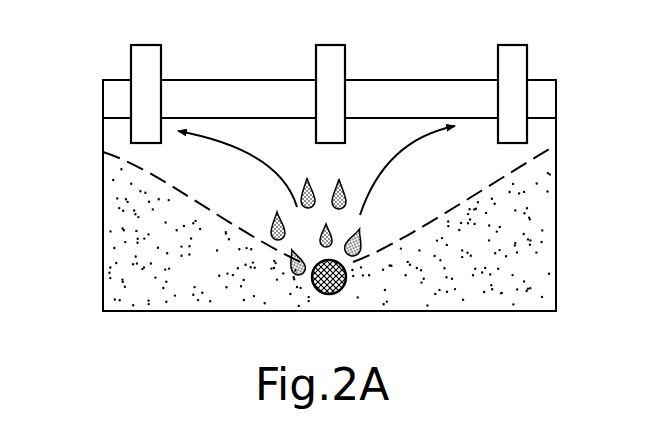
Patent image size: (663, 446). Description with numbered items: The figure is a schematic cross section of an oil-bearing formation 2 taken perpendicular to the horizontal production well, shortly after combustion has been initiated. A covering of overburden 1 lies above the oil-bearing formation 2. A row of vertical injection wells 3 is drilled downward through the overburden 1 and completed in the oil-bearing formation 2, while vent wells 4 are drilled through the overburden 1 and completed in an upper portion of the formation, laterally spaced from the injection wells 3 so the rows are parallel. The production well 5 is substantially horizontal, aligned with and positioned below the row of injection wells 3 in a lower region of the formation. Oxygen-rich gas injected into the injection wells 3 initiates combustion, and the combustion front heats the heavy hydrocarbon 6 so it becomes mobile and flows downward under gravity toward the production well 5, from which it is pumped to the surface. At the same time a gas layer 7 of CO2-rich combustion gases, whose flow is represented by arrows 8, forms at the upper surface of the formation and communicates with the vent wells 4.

The overburden 1 is at (112, 100).
The oil-bearing formation 2 is at (110, 225).
The injection wells 3 is at (331, 45).
The vent wells 4 is at (148, 45).
The production well 5 is at (331, 293).
The heavy hydrocarbon 6 is at (362, 243).
The gas layer 7 is at (316, 166).
The arrows 8 is at (323, 174).